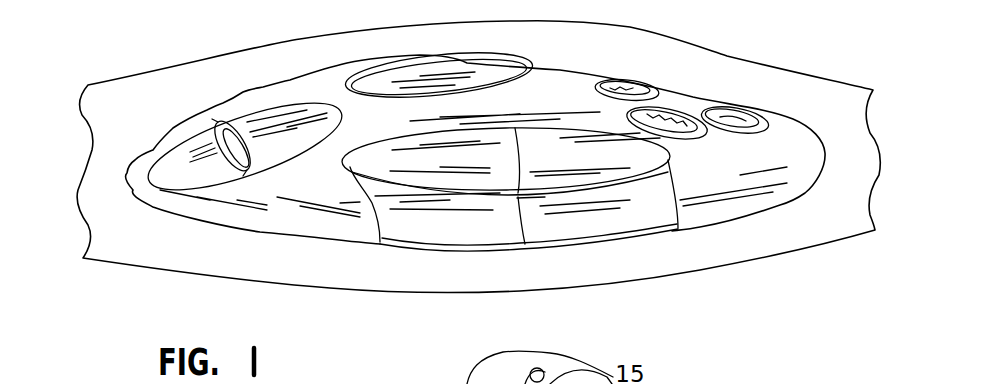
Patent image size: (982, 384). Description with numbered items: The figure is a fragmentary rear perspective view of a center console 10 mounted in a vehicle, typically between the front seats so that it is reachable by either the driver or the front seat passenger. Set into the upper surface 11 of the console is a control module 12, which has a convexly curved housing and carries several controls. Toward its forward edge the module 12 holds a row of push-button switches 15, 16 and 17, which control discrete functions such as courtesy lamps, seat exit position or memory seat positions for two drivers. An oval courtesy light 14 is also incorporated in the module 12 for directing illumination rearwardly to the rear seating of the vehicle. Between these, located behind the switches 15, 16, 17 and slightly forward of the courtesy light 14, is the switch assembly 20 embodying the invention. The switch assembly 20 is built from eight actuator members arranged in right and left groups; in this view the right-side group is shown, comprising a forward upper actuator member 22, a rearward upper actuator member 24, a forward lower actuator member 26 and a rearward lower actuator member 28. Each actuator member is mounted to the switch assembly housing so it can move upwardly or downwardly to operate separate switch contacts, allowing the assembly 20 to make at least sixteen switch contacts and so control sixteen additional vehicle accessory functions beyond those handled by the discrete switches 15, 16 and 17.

The center console 10 is at (153, 72).
The upper surface 11 is at (829, 229).
The control module 12 is at (795, 118).
The courtesy light 14 is at (160, 155).
The push-button switch 15 is at (737, 110).
The push-button switch 16 is at (632, 82).
The push-button switch 17 is at (675, 110).
The switch assembly 20 is at (694, 75).
The forward upper actuator member 22 is at (658, 180).
The rearward upper actuator member 24 is at (443, 182).
The forward lower actuator member 26 is at (623, 224).
The rearward lower actuator member 28 is at (465, 247).